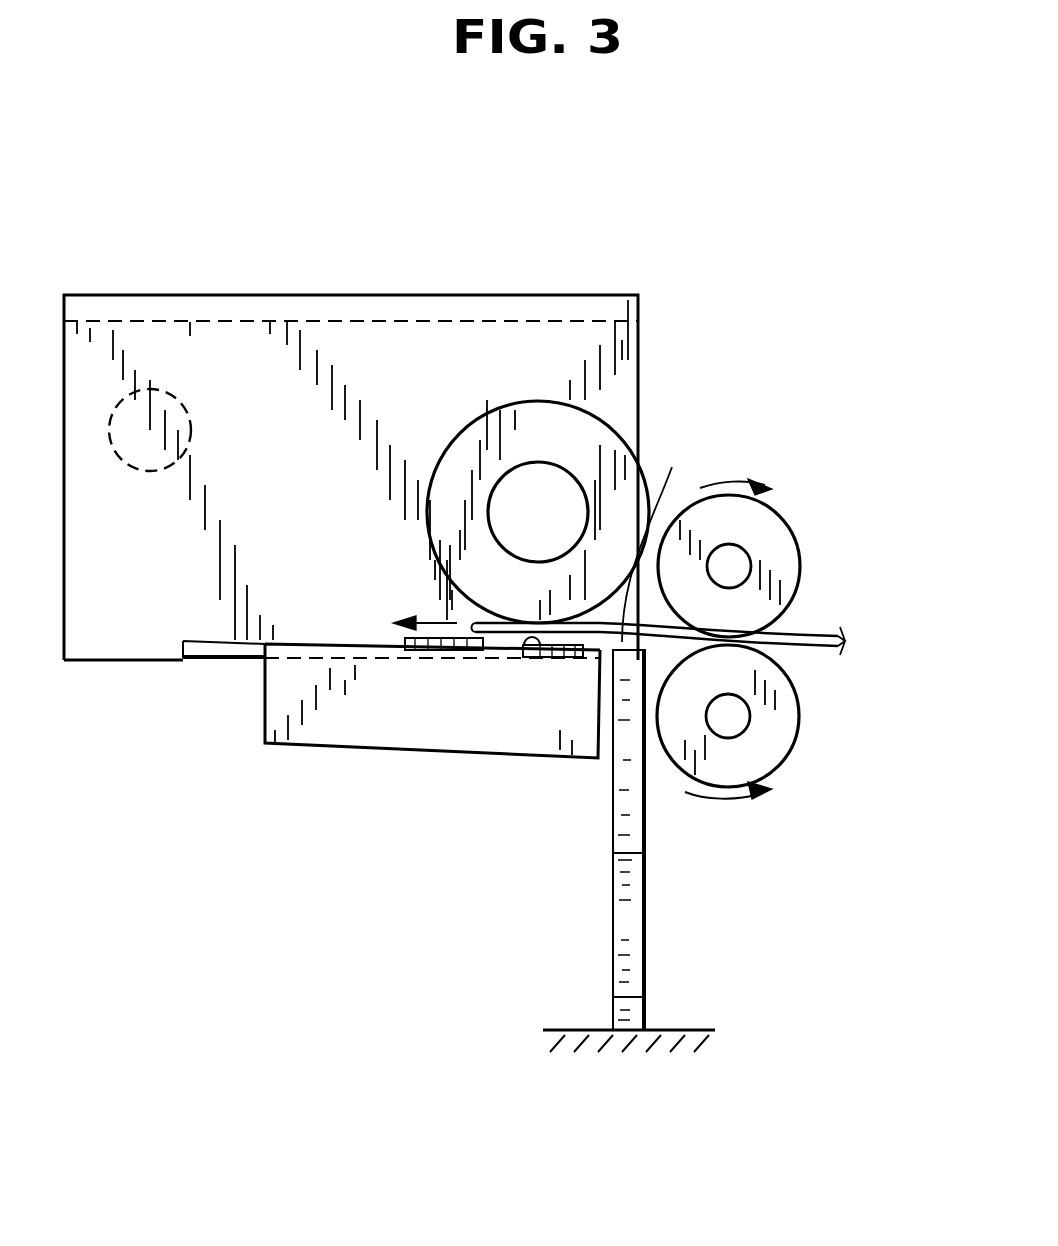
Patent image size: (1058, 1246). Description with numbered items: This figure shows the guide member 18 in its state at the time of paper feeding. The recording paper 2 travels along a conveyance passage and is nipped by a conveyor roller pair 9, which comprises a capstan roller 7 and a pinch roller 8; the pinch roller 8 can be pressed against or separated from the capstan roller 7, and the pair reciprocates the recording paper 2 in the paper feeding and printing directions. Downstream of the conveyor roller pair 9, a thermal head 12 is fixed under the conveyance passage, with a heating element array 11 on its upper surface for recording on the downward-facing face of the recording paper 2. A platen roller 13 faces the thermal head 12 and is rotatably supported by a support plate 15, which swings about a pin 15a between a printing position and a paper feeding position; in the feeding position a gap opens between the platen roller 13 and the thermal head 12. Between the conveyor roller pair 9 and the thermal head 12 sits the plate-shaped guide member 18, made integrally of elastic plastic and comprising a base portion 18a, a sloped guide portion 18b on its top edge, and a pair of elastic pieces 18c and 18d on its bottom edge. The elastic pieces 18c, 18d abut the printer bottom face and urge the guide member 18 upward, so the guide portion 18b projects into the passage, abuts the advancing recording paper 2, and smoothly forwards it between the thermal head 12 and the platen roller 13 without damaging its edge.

The recording paper 2 is at (485, 633).
The capstan roller 7 is at (792, 578).
The pinch roller 8 is at (787, 690).
The conveyor roller pair 9 is at (898, 582).
The heating element array 11 is at (533, 657).
The thermal head 12 is at (312, 746).
The platen roller 13 is at (538, 402).
The support plate 15 is at (380, 295).
The pin 15a is at (148, 472).
The guide member 18 is at (667, 851).
The base portion 18a is at (642, 818).
The guide portion 18b is at (664, 532).
The elastic piece 18c is at (638, 938).
The elastic piece 18d is at (736, 975).